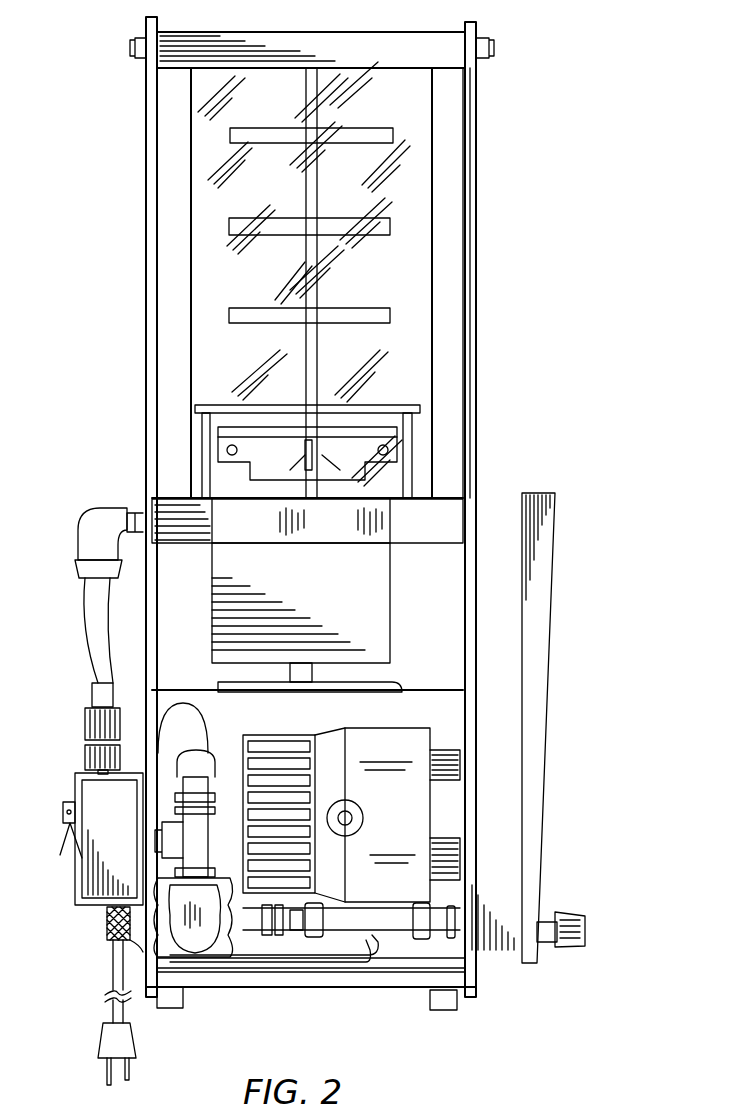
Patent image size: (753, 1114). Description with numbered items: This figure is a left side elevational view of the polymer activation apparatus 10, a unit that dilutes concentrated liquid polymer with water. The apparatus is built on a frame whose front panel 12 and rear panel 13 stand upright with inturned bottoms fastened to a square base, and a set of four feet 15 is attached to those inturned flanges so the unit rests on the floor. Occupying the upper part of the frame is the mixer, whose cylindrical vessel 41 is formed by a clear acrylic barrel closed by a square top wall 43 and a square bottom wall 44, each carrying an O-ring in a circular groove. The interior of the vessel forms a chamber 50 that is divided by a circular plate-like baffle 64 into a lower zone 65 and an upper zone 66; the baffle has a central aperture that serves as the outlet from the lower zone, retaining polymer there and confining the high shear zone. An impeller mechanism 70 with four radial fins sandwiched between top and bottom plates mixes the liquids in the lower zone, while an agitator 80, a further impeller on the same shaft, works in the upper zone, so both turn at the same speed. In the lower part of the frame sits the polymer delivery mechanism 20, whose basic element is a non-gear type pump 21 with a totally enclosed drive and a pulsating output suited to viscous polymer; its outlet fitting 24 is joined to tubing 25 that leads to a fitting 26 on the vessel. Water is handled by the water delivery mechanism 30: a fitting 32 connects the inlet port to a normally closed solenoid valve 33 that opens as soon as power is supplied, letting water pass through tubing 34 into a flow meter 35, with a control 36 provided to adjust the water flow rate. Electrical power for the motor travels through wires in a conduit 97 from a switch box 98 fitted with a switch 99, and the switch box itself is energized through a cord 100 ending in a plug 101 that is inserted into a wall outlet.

The polymer activation apparatus 10 is at (552, 180).
The front panel 12 is at (146, 198).
The rear panel 13 is at (473, 343).
The feet 15 is at (173, 1005).
The polymer delivery mechanism 20 is at (268, 728).
The pump 21 is at (392, 735).
The outlet fitting 24 is at (95, 771).
The tubing 25 is at (96, 683).
The fitting 26 is at (95, 512).
The water delivery mechanism 30 is at (590, 558).
The fitting 32 is at (205, 852).
The solenoid valve 33 is at (198, 928).
The tubing 34 is at (385, 933).
The flow meter 35 is at (548, 710).
The control 36 is at (560, 915).
The cylindrical vessel 41 is at (435, 170).
The top wall 43 is at (435, 44).
The bottom wall 44 is at (470, 497).
The chamber 50 is at (200, 283).
The baffle 64 is at (398, 404).
The lower zone 65 is at (400, 487).
The upper zone 66 is at (422, 252).
The impeller mechanism 70 is at (366, 418).
The agitator 80 is at (265, 338).
The conduit 97 is at (312, 960).
The switch box 98 is at (90, 860).
The switch 99 is at (62, 878).
The cord 100 is at (116, 975).
The plug 101 is at (108, 1042).